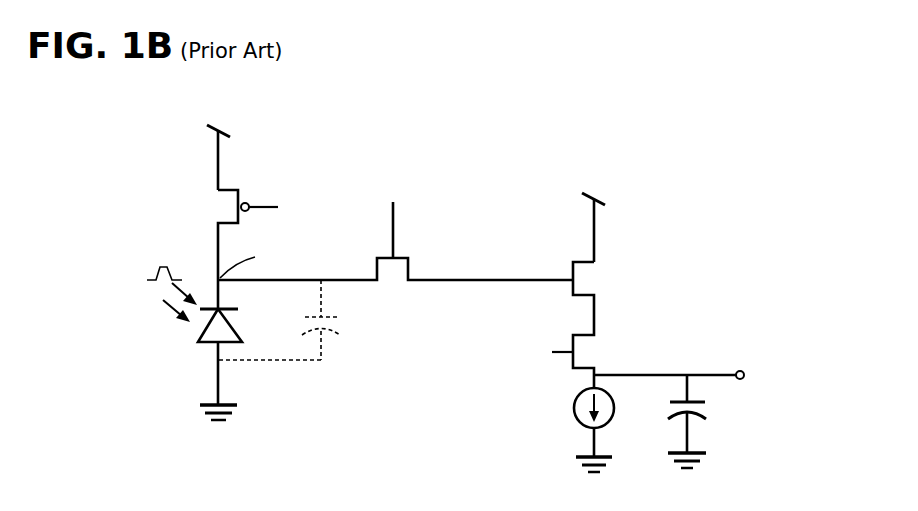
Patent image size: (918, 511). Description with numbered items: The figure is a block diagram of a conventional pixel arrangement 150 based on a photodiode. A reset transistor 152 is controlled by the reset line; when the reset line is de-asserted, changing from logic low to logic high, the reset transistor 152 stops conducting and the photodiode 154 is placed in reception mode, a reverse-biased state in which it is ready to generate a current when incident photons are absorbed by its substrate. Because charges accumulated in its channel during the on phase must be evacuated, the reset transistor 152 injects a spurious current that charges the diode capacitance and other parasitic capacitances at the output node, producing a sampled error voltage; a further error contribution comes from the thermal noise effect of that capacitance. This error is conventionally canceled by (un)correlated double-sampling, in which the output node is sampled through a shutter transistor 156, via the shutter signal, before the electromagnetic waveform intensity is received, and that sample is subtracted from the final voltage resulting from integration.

The pixel arrangement 150 is at (116, 161).
The reset transistor 152 is at (228, 190).
The photodiode 154 is at (165, 336).
The shutter transistor 156 is at (408, 258).